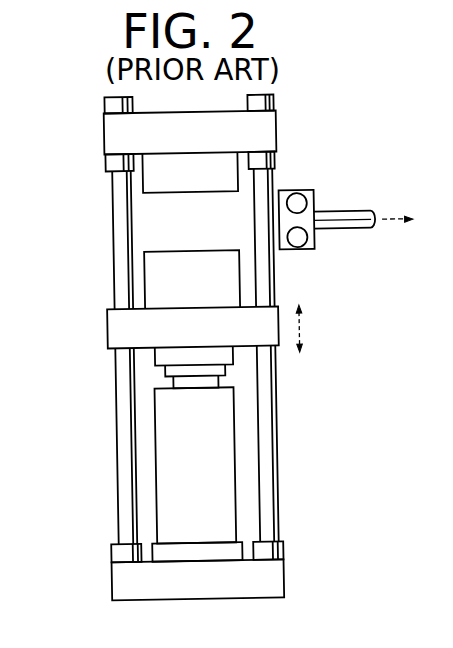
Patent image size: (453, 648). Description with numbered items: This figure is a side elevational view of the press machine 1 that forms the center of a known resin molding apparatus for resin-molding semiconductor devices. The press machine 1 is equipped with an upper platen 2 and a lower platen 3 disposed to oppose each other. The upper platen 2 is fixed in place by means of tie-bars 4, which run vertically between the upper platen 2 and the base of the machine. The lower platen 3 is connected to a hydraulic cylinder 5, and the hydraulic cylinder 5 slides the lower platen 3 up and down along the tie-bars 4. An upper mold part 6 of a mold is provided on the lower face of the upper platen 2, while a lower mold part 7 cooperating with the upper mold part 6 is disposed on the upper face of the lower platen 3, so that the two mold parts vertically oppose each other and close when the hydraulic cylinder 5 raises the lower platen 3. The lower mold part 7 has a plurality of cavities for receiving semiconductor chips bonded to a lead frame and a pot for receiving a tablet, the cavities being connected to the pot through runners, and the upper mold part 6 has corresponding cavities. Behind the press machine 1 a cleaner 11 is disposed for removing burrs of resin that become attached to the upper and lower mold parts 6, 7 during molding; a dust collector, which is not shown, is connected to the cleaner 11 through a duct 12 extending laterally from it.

The press machine 1 is at (99, 95).
The upper platen 2 is at (113, 137).
The lower platen 3 is at (116, 329).
The tie-bars 4 is at (118, 386).
The hydraulic cylinder 5 is at (168, 445).
The upper mold part 6 is at (152, 181).
The lower mold part 7 is at (150, 281).
The cleaner 11 is at (292, 192).
The duct 12 is at (334, 214).